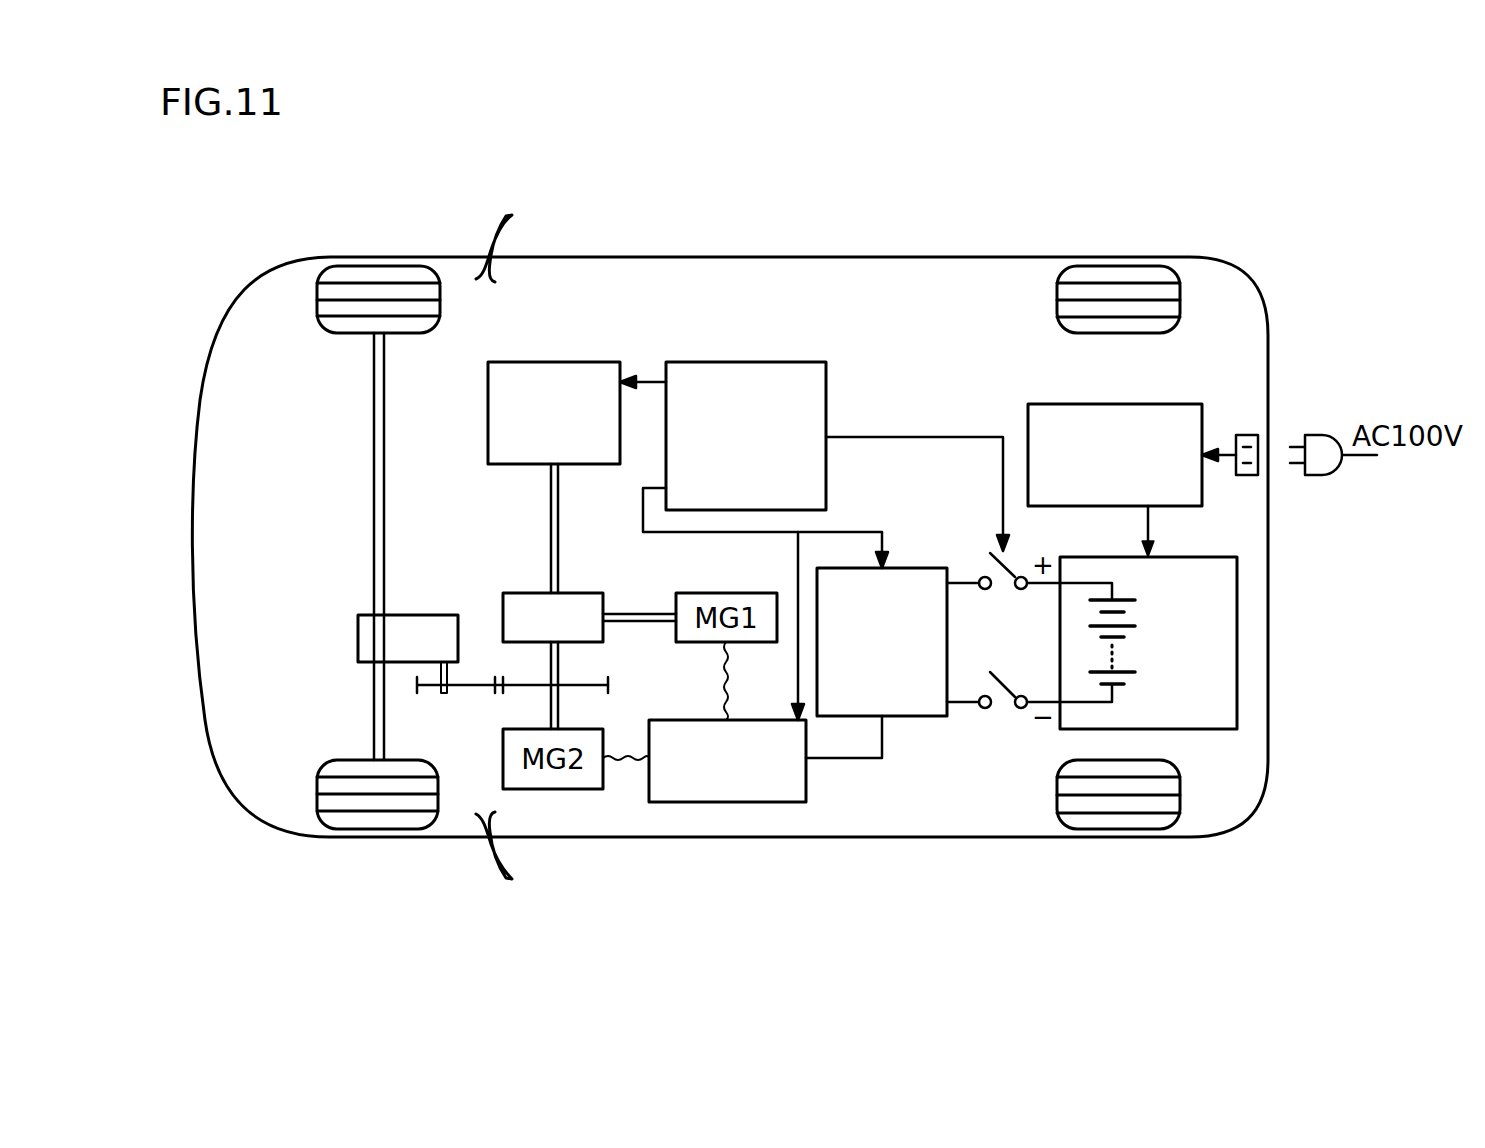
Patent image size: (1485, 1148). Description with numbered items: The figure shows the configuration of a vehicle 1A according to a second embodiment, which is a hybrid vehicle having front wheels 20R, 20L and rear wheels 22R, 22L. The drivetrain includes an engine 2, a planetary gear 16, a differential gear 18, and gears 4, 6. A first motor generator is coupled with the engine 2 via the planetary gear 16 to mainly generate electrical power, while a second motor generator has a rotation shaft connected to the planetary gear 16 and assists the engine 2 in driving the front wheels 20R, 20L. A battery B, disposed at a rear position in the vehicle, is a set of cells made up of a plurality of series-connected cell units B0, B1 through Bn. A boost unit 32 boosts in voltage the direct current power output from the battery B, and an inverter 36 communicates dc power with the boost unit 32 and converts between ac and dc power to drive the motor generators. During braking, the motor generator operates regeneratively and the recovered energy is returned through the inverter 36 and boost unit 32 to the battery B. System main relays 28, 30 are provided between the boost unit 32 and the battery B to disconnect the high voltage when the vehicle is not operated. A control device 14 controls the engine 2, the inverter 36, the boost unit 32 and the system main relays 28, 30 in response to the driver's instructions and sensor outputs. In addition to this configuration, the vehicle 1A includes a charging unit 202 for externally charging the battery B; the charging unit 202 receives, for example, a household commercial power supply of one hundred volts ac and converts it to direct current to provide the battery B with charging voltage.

The vehicle 1A is at (985, 257).
The engine 2 is at (595, 362).
The gear 4 is at (609, 693).
The gear 6 is at (417, 692).
The control device 14 is at (763, 362).
The planetary gear 16 is at (525, 593).
The differential gear 18 is at (358, 637).
The front wheel 20R is at (355, 266).
The front wheel 20L is at (355, 829).
The rear wheel 22R is at (1098, 266).
The rear wheel 22L is at (1098, 829).
The system main relay 28 is at (985, 590).
The system main relay 30 is at (985, 708).
The boost unit 32 is at (918, 716).
The inverter 36 is at (742, 802).
The battery B is at (1148, 733).
The cell unit B0 is at (1127, 607).
The cell unit B1 is at (1127, 633).
The cell unit Bn is at (1127, 679).
The charging unit 202 is at (1150, 404).